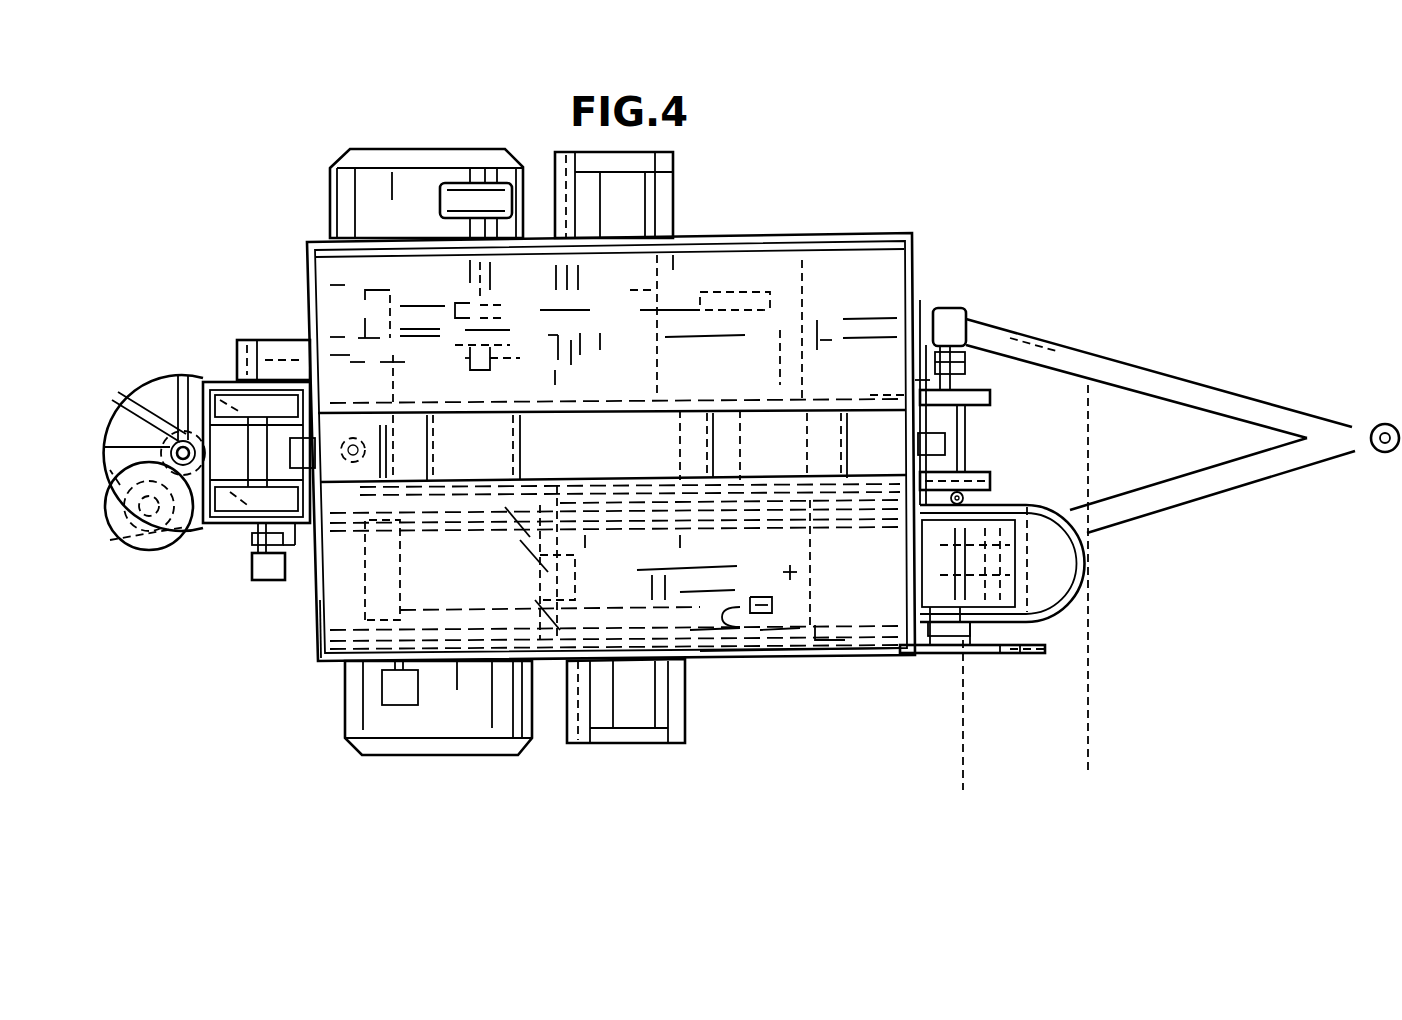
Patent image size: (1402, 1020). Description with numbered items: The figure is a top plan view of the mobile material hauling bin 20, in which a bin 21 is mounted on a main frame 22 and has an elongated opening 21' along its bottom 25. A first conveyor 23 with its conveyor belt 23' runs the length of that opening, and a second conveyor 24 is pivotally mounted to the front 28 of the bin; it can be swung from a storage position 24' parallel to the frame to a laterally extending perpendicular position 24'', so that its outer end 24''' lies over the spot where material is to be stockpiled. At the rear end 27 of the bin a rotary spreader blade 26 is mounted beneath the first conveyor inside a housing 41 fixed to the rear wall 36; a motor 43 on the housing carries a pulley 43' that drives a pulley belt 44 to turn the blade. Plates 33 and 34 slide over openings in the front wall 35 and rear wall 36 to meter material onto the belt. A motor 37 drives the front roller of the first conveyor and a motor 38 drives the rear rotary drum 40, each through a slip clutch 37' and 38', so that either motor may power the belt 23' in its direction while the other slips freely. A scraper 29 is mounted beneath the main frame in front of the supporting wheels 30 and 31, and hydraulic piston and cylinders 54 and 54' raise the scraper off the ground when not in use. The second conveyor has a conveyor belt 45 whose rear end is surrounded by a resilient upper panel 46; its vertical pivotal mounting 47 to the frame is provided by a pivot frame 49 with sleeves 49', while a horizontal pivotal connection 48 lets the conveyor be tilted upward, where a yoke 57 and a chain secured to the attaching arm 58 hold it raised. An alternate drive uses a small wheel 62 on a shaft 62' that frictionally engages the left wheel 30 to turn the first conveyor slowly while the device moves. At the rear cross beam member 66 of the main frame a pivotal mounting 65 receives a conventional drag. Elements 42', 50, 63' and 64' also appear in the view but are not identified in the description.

The mobile material hauling bin 20 is at (688, 222).
The bin 21 is at (611, 425).
The elongated opening 21' is at (759, 423).
The main frame 22 is at (1072, 362).
The first conveyor 23 is at (969, 436).
The conveyor belt 23' is at (703, 423).
The second conveyor 24 is at (800, 670).
The storage position 24' is at (615, 669).
The lateral position 24'' is at (1060, 715).
The outer end 24''' is at (1114, 580).
The bottom 25 is at (620, 415).
The rotary spreader blade 26 is at (162, 375).
The rear end 27 is at (308, 318).
The front 28 is at (916, 292).
The scraper 29 is at (688, 712).
The wheel 30 is at (483, 756).
The wheel 31 is at (330, 193).
The plate 33 is at (913, 398).
The plate 34 is at (282, 365).
The front wall 35 is at (904, 308).
The rear wall 36 is at (320, 630).
The motor 37 is at (972, 335).
The slip clutch 37' is at (977, 423).
The motor 38 is at (253, 580).
The slip clutch 38' is at (242, 551).
The rear rotary drum 40 is at (228, 376).
The housing 41 is at (257, 342).
The wheel hub 42' is at (154, 420).
The motor 43 is at (149, 523).
The pulley 43' is at (138, 553).
The pulley belt 44 is at (205, 432).
The conveyor belt 45 is at (972, 655).
The resilient upper panel 46 is at (1088, 590).
The pivotal mounting 47 is at (975, 495).
The horizontal pivotal connection 48 is at (950, 654).
The pivot frame 49 is at (936, 571).
The sleeves 49' is at (982, 472).
The motor 50 is at (417, 691).
The hydraulic piston and cylinder 54 is at (767, 570).
The hydraulic piston and cylinder 54' is at (723, 327).
The yoke 57 is at (532, 548).
The attaching arm 58 is at (1006, 656).
The small wheel 62 is at (457, 203).
The shaft 62' is at (400, 332).
The pulley 63' is at (498, 295).
The pulley 64' is at (527, 327).
The pivotal mounting 65 is at (388, 434).
The rear cross beam member 66 is at (366, 555).